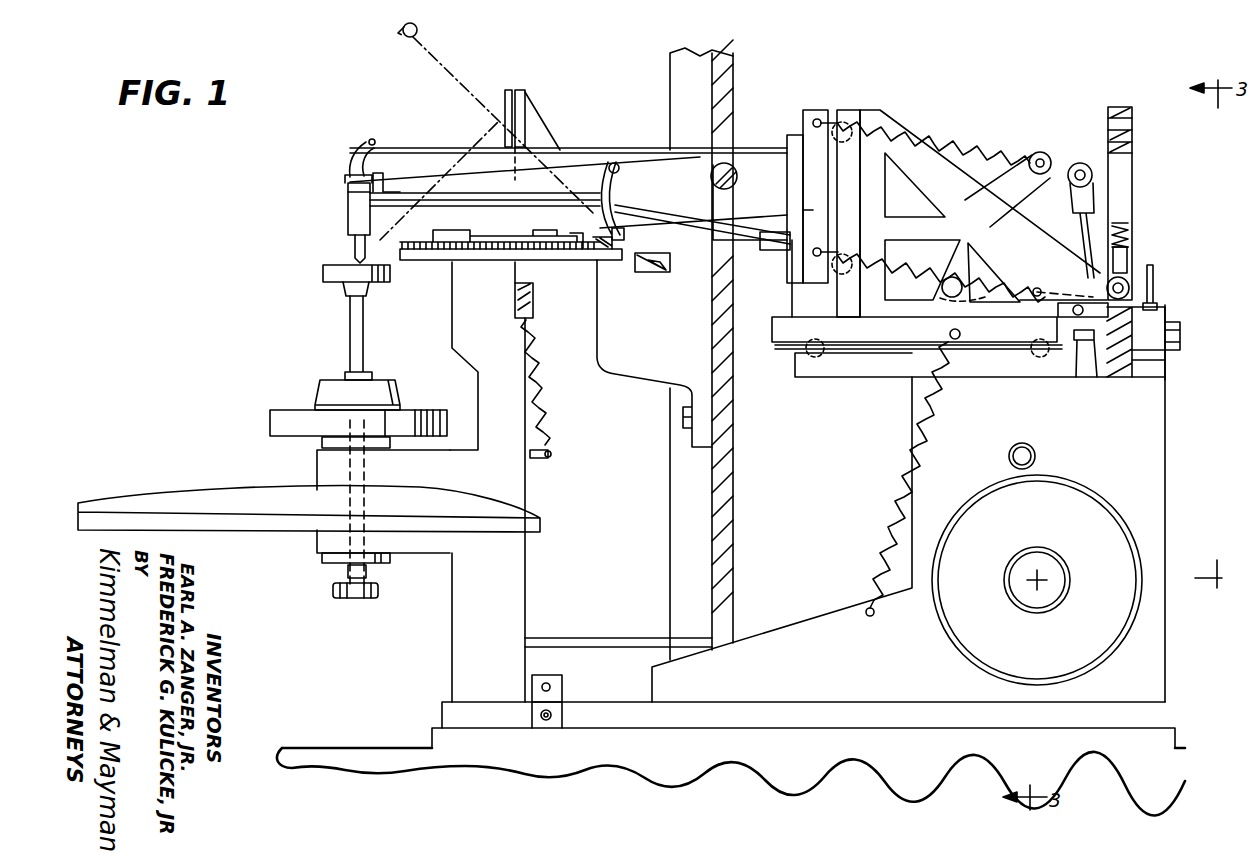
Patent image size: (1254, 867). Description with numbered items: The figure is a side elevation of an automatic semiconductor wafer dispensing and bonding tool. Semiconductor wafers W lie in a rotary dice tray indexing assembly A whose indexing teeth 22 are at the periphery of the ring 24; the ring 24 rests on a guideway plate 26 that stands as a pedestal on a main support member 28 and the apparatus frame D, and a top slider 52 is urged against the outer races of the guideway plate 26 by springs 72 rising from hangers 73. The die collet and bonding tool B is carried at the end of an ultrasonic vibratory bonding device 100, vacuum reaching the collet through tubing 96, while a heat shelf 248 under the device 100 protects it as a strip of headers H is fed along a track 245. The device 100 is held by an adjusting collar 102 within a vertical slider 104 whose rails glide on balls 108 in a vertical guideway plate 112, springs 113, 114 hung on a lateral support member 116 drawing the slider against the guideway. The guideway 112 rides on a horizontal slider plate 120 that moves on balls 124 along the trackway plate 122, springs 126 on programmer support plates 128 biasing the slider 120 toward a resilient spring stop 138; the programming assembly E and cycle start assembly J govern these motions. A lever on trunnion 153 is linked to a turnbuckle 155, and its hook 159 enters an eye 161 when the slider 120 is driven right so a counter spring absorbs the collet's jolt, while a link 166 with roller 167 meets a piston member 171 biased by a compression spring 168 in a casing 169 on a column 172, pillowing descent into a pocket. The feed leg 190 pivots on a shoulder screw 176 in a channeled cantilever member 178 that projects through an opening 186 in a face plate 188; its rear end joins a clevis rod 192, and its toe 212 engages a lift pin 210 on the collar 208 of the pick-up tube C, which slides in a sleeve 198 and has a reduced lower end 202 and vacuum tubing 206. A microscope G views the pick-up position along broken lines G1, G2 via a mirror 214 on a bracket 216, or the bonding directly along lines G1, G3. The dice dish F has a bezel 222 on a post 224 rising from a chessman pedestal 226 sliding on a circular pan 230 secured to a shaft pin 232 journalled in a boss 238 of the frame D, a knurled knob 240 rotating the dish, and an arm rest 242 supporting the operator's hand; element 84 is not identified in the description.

The indexing teeth 22 is at (592, 270).
The ring 24 is at (478, 252).
The guideway plate 26 is at (440, 261).
The main support member 28 is at (465, 330).
The top slider 52 is at (590, 252).
The springs 72 is at (547, 396).
The hangers 73 is at (552, 456).
The bar 84 is at (628, 640).
The tubing 96 is at (642, 120).
The ultrasonic energy vibratory device 100 is at (725, 211).
The adjusting collar 102 is at (806, 120).
The vertical slider 104 is at (840, 110).
The balls 108 is at (832, 122).
The vertical guideway plate 112 is at (872, 112).
The spring 113 is at (990, 150).
The spring 114 is at (941, 278).
The lateral support member 116 is at (994, 214).
The slider plate 120 is at (772, 317).
The horizontal slider plate 122 is at (790, 360).
The balls 124 is at (818, 360).
The springs 126 is at (895, 490).
The programmer support plates 128 is at (1165, 455).
The resilient spring stop 138 is at (1180, 340).
The trunnion 153 is at (945, 295).
The turnbuckle 155 is at (1094, 372).
The hook 159 is at (1165, 316).
The eye 161 is at (1155, 287).
The link 166 is at (1058, 280).
The roller 167 is at (1130, 288).
The compression spring 168 is at (1130, 228).
The casing 169 is at (1136, 178).
The piston member 171 is at (1130, 256).
The column 172 is at (1165, 365).
The shoulder screw 176 is at (790, 156).
The channeled cantilever member 178 is at (565, 150).
The opening 186 is at (700, 288).
The face plate 188 is at (735, 575).
The feed leg 190 is at (1000, 160).
The clevis rod 192 is at (1088, 166).
The sleeve 198 is at (348, 210).
The reduced lower end 202 is at (330, 266).
The tubing 206 is at (380, 121).
The collar 208 is at (345, 183).
The lift pin 210 is at (385, 168).
The toe 212 is at (385, 194).
The mirror 214 is at (512, 92).
The bracket 216 is at (525, 112).
The bezel 222 is at (340, 288).
The post 224 is at (350, 333).
The pedestal 226 is at (320, 388).
The circular pan 230 is at (270, 422).
The shaft pin 232 is at (368, 572).
The boss 238 is at (432, 479).
The knurled knob 240 is at (346, 596).
The arm rest 242 is at (176, 493).
The track 245 is at (632, 276).
The heat shelf 248 is at (768, 244).
The dice tray indexing assembly A is at (507, 221).
The die collet and bonding tool B is at (640, 216).
The pick-up tube C is at (348, 244).
The apparatus frame D is at (428, 720).
The programming assembly E is at (1178, 547).
The dice dish F is at (312, 278).
The microscope G is at (420, 30).
The observation line G1 is at (460, 82).
The observation line G2 is at (490, 134).
The observation line G3 is at (590, 210).
The headers H is at (668, 272).
The cycle start assembly J is at (990, 498).
The semiconductor wafers W is at (672, 264).